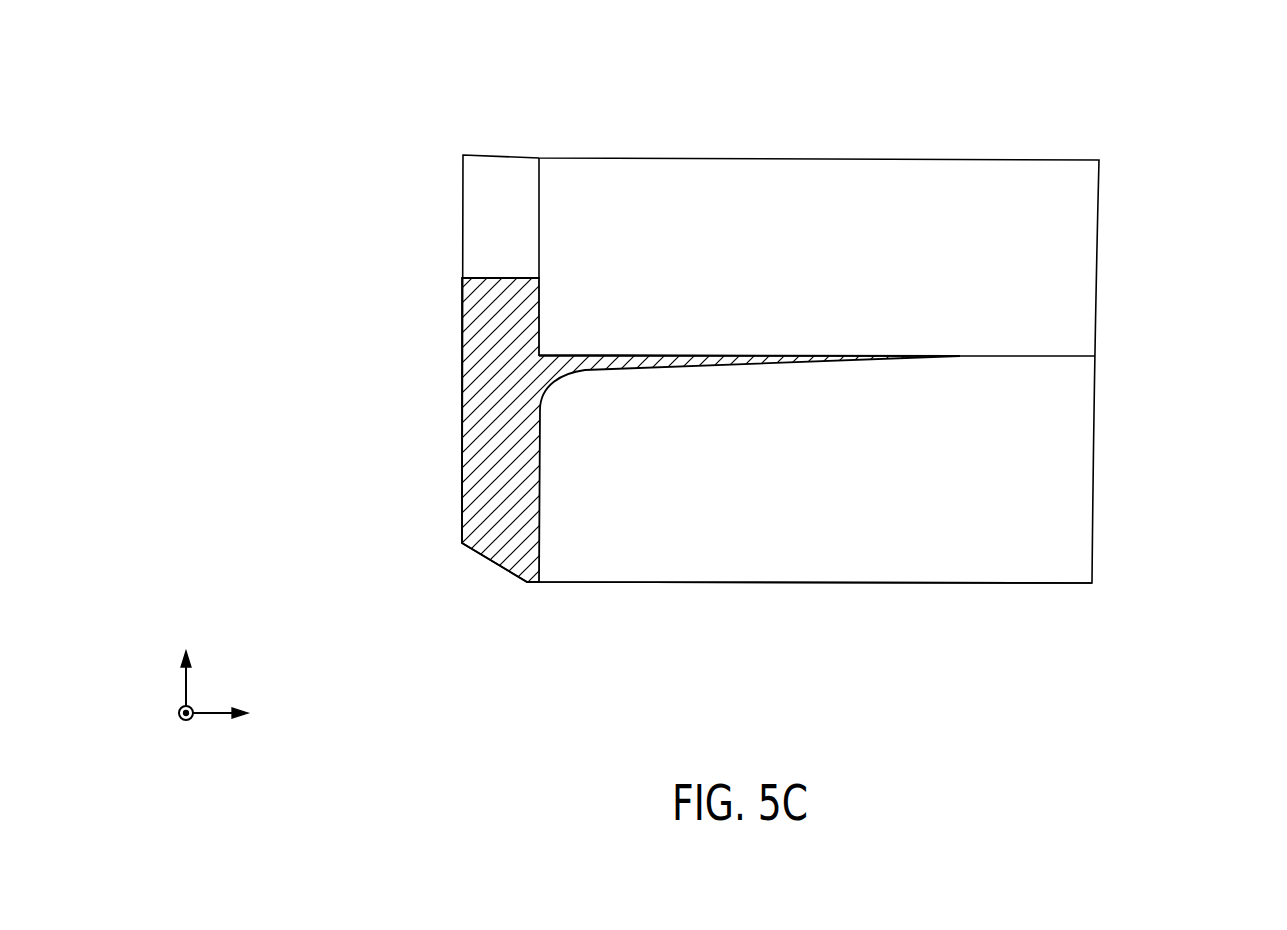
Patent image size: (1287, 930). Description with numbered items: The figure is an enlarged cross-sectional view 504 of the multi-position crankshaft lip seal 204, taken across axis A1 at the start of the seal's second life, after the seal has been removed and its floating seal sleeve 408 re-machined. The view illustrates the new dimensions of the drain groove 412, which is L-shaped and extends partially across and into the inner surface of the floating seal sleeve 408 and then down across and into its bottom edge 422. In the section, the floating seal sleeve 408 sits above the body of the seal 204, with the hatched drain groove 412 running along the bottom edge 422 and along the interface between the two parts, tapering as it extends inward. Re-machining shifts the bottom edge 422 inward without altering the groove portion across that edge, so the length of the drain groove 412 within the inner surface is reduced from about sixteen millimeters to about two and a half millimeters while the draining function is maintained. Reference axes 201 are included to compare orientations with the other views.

The enlarged cross-sectional view 504 is at (1168, 105).
The bottom edge 422 is at (462, 200).
The floating seal sleeve 408 is at (823, 275).
The multi-position crankshaft lip seal 204 is at (823, 480).
The drain groove 412 is at (512, 411).
The reference axes 201 is at (229, 640).